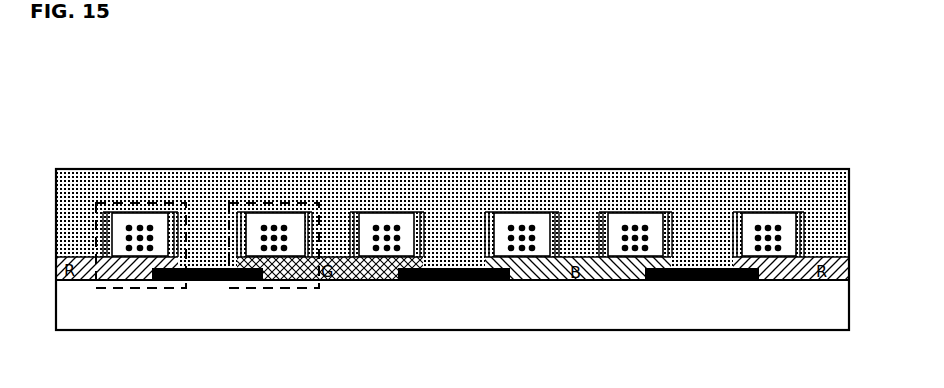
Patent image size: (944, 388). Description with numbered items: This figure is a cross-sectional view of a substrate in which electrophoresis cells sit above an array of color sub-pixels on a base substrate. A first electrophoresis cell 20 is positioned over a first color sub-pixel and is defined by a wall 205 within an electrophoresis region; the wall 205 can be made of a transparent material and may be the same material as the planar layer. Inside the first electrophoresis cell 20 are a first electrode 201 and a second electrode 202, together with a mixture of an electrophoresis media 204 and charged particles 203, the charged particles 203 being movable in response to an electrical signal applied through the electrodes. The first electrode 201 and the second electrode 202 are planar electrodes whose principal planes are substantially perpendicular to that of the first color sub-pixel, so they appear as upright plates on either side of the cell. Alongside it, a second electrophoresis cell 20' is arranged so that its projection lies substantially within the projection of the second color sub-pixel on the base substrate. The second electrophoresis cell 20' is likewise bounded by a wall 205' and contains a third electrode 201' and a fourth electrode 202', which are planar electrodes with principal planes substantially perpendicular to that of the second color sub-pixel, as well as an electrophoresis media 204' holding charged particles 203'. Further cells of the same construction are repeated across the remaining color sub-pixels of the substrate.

The electrophoresis cell 20 is at (150, 225).
The second electrophoresis cell 20' is at (351, 229).
The first electrode 201 is at (218, 168).
The third electrode 201' is at (266, 186).
The second electrode 202 is at (106, 168).
The fourth electrode 202' is at (335, 185).
The charged particles 203 is at (173, 165).
The charged particles 203' is at (296, 169).
The electrophoresis media 204 is at (140, 167).
The electrophoresis media 204' is at (311, 177).
The wall 205 is at (69, 168).
The wall 205' is at (393, 199).